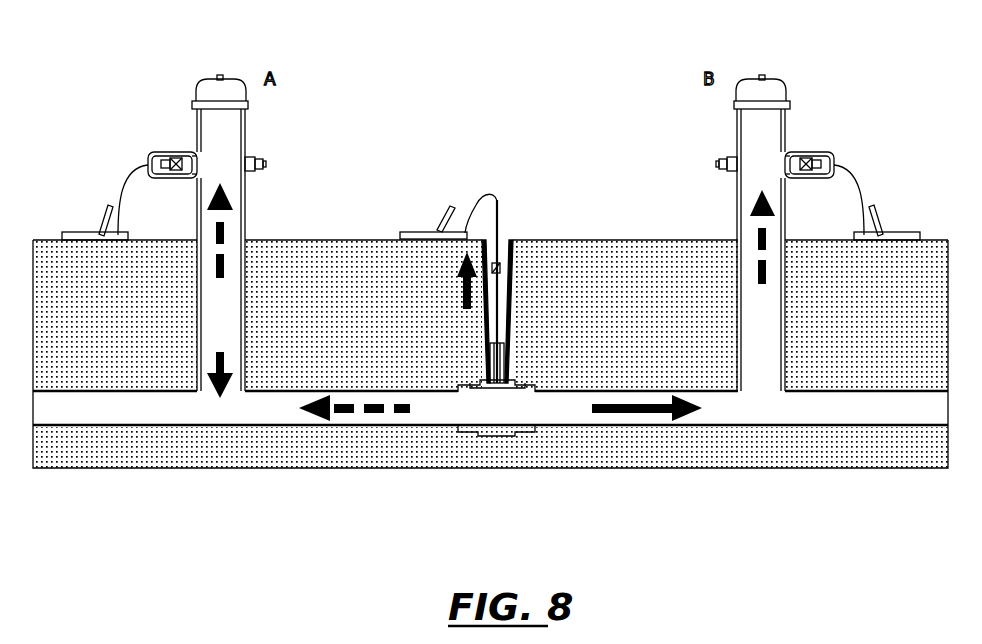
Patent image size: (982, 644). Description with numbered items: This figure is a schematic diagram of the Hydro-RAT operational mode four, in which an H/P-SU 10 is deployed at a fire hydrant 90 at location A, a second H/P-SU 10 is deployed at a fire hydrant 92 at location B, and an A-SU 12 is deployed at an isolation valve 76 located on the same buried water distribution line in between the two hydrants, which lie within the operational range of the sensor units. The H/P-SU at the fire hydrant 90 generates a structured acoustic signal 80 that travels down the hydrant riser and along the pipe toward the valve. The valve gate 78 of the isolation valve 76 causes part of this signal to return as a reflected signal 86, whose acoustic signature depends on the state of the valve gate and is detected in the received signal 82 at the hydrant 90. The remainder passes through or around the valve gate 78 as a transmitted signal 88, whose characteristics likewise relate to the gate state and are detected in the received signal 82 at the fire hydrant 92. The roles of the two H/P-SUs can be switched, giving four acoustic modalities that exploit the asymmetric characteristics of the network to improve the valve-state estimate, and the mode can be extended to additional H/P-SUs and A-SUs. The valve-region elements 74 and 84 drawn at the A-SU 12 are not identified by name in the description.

The H/P-SU 10 is at (112, 75).
The A-SU 12 is at (438, 192).
The valve stem 74 is at (503, 312).
The isolation valve 76 is at (525, 383).
The valve gate 78 is at (491, 373).
The generated structured acoustic signal 80 is at (232, 341).
The received signal 82 is at (232, 303).
The flow through valve 84 is at (456, 293).
The reflected signal 86 is at (443, 418).
The transmitted signal 88 is at (580, 418).
The fire hydrant 90 is at (287, 109).
The fire hydrant 92 is at (723, 109).